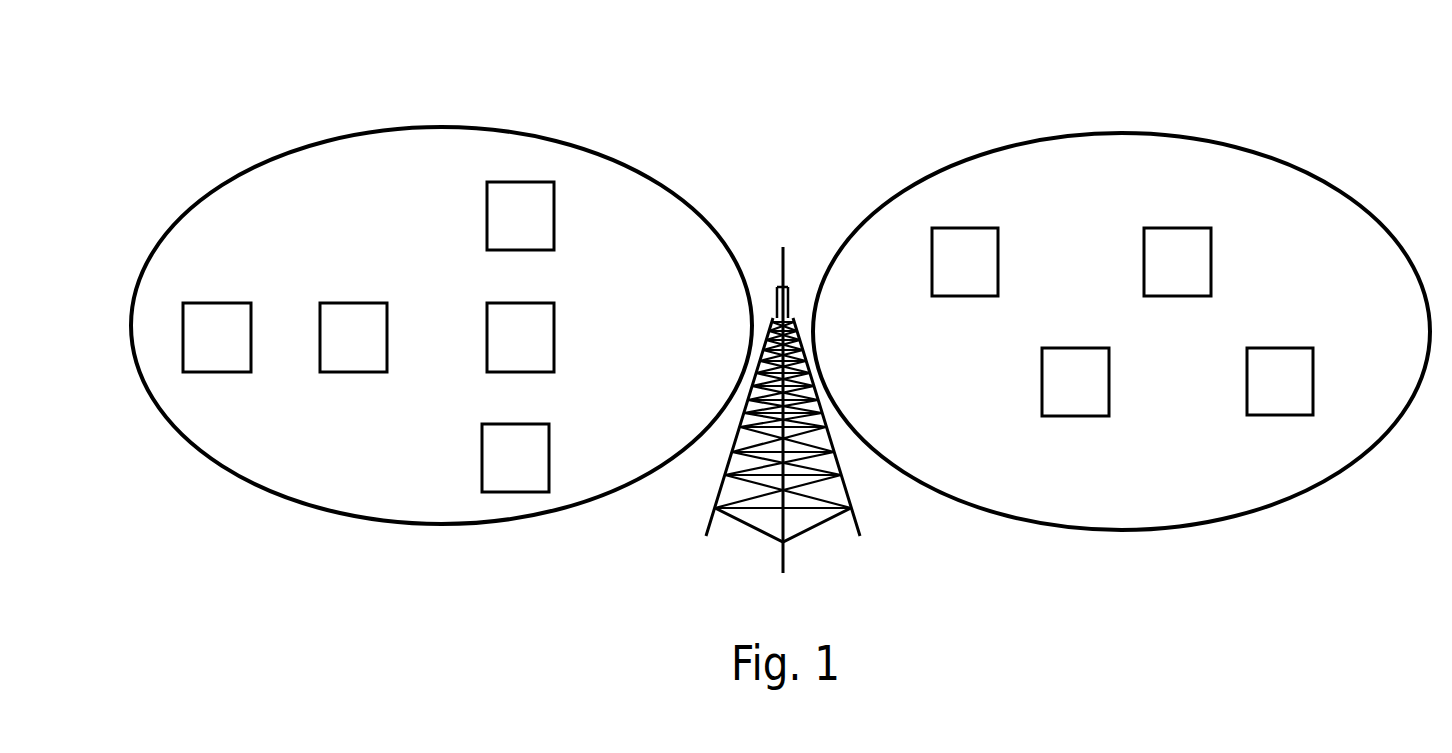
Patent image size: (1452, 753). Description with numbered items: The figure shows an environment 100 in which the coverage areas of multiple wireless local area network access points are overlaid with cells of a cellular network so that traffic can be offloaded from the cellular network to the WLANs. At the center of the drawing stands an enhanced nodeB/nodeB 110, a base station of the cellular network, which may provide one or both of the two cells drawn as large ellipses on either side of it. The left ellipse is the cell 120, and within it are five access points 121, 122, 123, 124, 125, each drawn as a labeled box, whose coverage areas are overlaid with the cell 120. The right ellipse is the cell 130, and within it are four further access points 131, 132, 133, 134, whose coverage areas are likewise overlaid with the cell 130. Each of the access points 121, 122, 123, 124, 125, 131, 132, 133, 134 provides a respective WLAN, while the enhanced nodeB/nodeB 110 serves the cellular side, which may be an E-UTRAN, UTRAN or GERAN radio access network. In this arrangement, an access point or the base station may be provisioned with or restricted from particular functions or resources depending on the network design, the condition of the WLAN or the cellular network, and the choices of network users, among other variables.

The environment 100 is at (756, 56).
The enhanced nodeB/nodeB 110 is at (768, 535).
The cell 120 is at (432, 525).
The cell 130 is at (1138, 532).
The access point 121 is at (198, 360).
The access point 122 is at (334, 360).
The access point 123 is at (540, 239).
The access point 124 is at (540, 360).
The access point 125 is at (496, 481).
The access point 131 is at (946, 285).
The access point 132 is at (1158, 285).
The access point 133 is at (1056, 405).
The access point 134 is at (1261, 405).